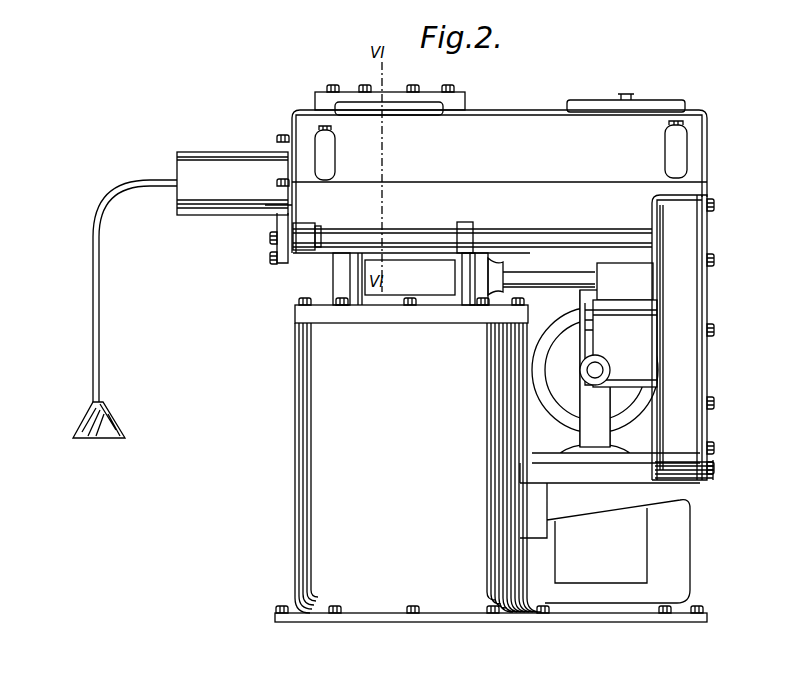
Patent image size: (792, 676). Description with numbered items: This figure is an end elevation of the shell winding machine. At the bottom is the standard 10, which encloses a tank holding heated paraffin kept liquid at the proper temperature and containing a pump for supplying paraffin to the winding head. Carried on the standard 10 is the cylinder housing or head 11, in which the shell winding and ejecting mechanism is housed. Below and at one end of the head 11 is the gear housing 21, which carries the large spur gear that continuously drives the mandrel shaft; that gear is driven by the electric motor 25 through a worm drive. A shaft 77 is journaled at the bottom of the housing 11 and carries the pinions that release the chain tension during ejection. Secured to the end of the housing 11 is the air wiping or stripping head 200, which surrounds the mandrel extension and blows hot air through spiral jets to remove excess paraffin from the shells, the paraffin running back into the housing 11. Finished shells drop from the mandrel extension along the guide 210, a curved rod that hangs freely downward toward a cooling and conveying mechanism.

The standard 10 is at (491, 460).
The cylinder housing or head 11 is at (499, 169).
The gear housing 21 is at (690, 377).
The electric motor 25 is at (542, 418).
The shaft 77 is at (418, 234).
The air wiping or stripping head 200 is at (212, 162).
The guide 210 is at (93, 340).